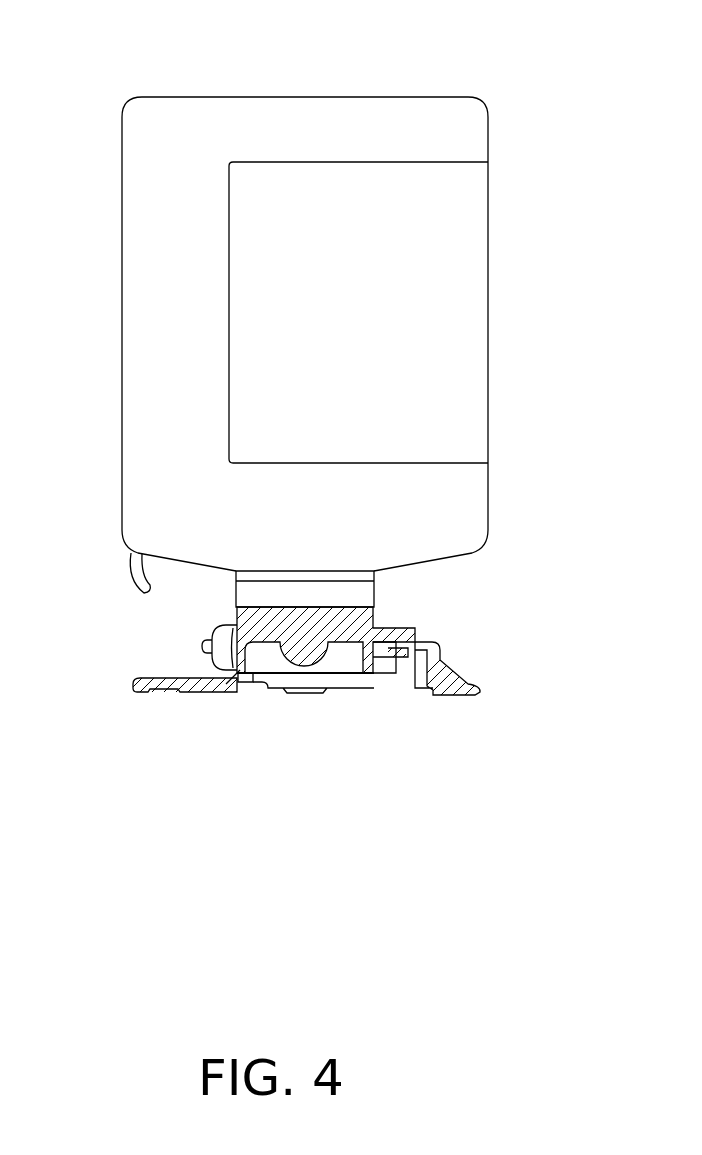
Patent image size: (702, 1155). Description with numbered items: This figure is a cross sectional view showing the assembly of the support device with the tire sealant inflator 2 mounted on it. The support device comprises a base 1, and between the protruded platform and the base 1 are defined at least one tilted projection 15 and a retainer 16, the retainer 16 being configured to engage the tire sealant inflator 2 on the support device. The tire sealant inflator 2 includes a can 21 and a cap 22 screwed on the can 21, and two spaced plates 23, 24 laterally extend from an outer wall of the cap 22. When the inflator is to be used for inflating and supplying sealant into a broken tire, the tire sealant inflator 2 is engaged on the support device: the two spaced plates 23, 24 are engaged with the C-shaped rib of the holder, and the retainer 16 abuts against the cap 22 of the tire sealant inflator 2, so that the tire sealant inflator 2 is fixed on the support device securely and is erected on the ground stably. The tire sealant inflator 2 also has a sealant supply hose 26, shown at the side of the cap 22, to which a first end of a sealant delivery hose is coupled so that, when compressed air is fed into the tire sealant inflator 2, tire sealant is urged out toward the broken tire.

The base 1 is at (152, 692).
The tire sealant inflator 2 is at (303, 96).
The tilted projection 15 is at (237, 673).
The retainer 16 is at (243, 682).
The can 21 is at (478, 378).
The cap 22 is at (360, 592).
The spaced plate 23 is at (405, 643).
The spaced plate 24 is at (384, 642).
The sealant supply hose 26 is at (205, 645).